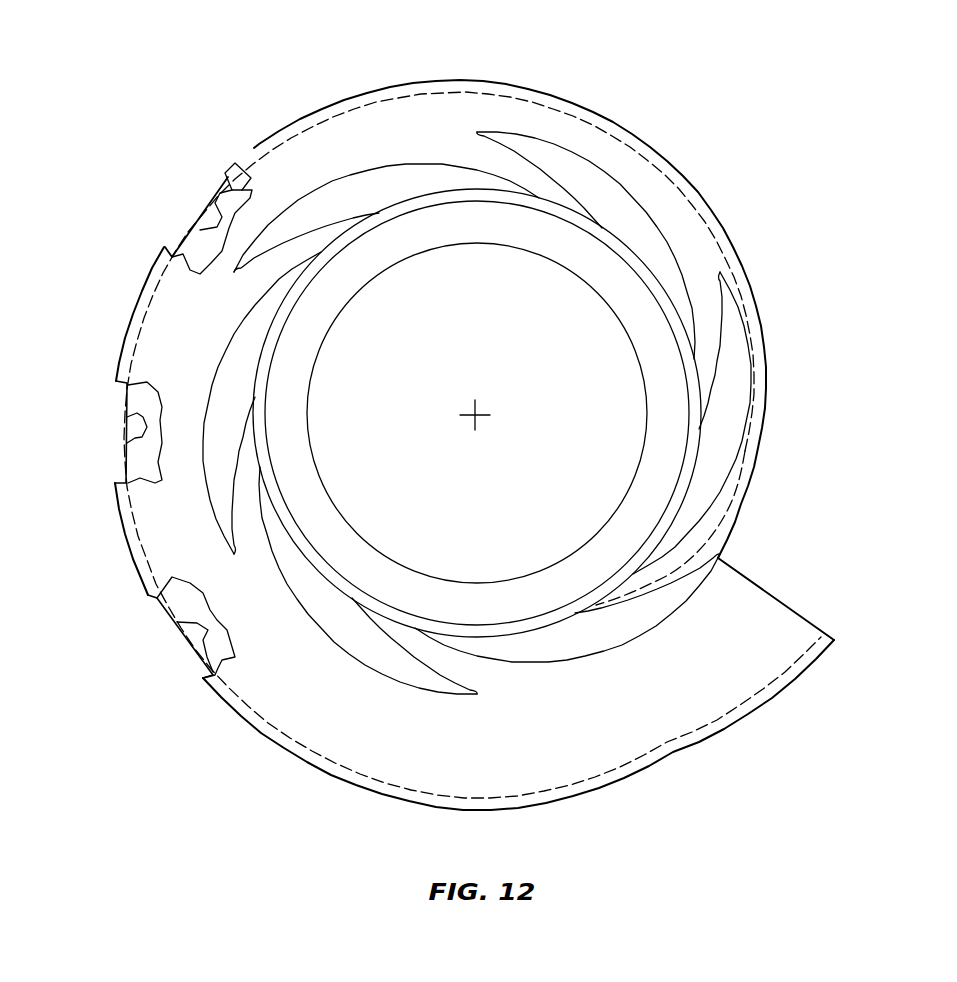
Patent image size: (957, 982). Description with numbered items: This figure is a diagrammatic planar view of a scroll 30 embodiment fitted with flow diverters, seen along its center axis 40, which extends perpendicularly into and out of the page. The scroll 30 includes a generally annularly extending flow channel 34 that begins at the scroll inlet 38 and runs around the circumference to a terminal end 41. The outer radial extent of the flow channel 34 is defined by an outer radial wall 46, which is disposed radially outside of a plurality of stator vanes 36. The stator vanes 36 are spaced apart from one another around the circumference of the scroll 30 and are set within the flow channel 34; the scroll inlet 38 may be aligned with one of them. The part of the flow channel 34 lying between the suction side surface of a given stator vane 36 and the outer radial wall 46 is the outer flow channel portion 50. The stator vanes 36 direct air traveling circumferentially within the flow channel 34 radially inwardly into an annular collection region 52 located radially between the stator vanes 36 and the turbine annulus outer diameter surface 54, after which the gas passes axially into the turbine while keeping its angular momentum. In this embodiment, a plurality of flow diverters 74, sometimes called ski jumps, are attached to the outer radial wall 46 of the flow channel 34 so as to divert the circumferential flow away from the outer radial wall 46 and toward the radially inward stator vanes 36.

The scroll 30 is at (686, 103).
The flow channel 34 is at (340, 91).
The stator vanes 36 is at (627, 212).
The scroll inlet 38 is at (797, 607).
The center axis 40 is at (472, 418).
The terminal end 41 is at (602, 603).
The outer radial wall 46 is at (232, 175).
The outer flow channel portion 50 is at (455, 128).
The annular collection region 52 is at (653, 345).
The turbine annulus outer diameter surface 54 is at (563, 273).
The flow diverters 74 is at (210, 232).